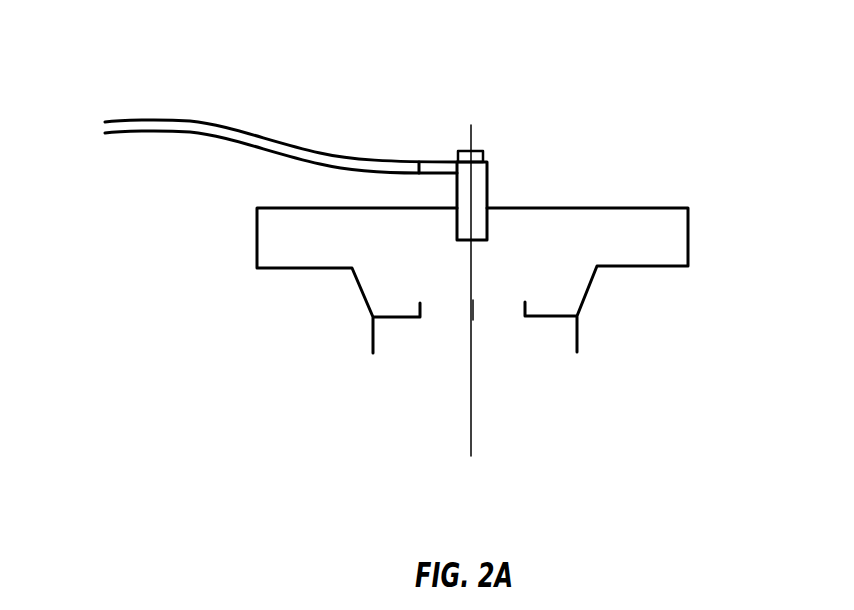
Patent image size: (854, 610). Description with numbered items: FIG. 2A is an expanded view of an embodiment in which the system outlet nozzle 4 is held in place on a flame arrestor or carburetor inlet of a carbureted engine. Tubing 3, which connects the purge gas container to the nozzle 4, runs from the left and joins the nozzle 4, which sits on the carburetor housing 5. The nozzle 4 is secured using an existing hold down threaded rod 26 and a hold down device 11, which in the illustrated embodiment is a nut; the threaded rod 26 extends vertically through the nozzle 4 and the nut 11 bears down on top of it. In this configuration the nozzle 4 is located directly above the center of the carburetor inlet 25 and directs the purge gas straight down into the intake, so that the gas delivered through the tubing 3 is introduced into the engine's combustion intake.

The tubing 3 is at (188, 120).
The hold down device 11 is at (462, 150).
The nozzle 4 is at (488, 161).
The carburetor housing 5 is at (688, 207).
The carburetor inlet 25 is at (495, 308).
The threaded rod 26 is at (473, 428).